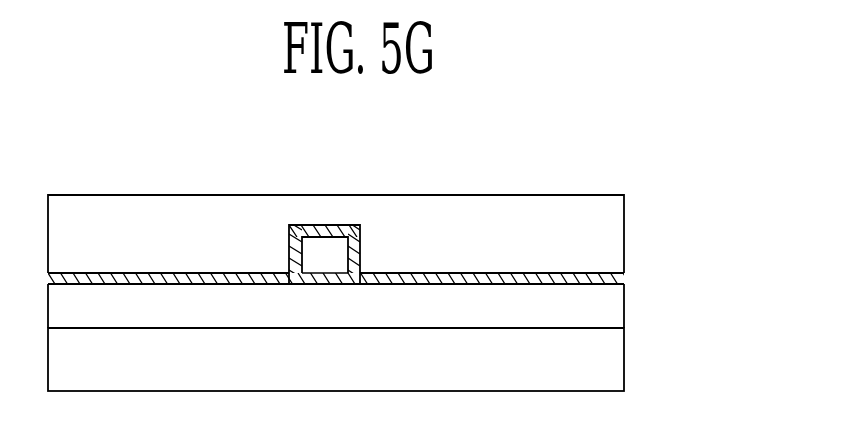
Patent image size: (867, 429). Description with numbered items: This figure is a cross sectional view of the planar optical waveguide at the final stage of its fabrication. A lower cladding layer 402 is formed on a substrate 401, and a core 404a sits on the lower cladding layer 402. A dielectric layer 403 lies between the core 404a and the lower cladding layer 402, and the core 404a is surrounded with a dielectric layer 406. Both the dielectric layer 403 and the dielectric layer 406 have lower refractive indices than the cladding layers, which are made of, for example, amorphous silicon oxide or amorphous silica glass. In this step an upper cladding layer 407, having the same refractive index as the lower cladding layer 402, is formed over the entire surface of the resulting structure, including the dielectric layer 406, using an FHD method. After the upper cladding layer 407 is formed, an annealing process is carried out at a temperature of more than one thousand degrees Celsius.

The substrate 401 is at (613, 360).
The lower cladding layer 402 is at (613, 316).
The dielectric layer 403 is at (319, 278).
The core 404a is at (341, 247).
The dielectric layer 406 is at (613, 278).
The upper cladding layer 407 is at (613, 230).